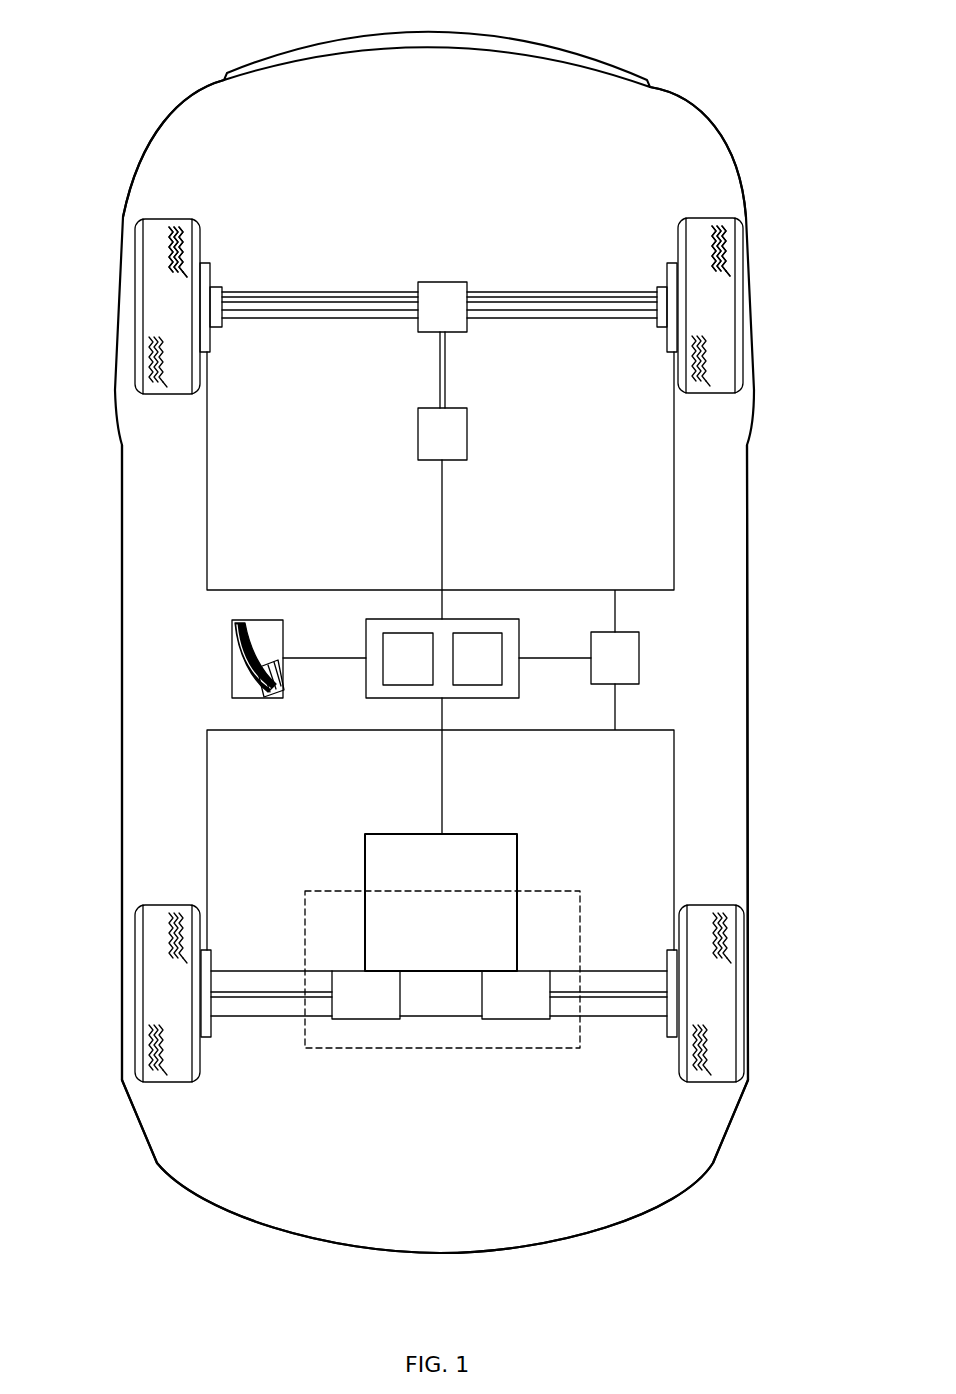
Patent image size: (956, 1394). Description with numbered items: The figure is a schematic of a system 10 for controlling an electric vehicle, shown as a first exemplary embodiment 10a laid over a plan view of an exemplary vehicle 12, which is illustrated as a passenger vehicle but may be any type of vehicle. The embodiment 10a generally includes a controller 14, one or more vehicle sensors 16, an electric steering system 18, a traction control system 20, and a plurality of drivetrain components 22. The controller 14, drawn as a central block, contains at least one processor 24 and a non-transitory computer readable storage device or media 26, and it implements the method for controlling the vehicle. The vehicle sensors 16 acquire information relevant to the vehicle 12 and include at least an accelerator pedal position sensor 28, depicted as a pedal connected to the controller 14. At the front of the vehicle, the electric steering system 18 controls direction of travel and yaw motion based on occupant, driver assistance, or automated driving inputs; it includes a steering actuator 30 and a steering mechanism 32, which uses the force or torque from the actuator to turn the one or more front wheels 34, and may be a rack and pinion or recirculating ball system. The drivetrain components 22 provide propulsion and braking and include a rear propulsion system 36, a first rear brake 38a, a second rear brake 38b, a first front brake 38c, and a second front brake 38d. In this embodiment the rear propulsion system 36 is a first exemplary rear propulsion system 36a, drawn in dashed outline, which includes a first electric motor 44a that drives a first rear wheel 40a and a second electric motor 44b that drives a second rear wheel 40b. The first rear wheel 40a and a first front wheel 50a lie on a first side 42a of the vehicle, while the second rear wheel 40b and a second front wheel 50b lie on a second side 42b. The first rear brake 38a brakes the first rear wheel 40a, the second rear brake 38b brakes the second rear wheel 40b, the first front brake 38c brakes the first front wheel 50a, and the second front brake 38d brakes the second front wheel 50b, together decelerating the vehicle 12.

The system for controlling an electric vehicle 10 is at (476, 1163).
The first exemplary embodiment 10a is at (452, 1108).
The vehicle 12 is at (648, 82).
The controller 14 is at (432, 674).
The vehicle sensors 16 is at (224, 652).
The electric steering system 18 is at (439, 371).
The traction control system 20 is at (615, 658).
The drivetrain components 22 is at (212, 340).
The processor 24 is at (408, 659).
The non-transitory computer readable storage device or media 26 is at (477, 659).
The accelerator pedal position sensor 28 is at (232, 660).
The steering actuator 30 is at (442, 396).
The steering mechanism 32 is at (439, 307).
The front wheels 34 is at (175, 219).
The rear propulsion system 36 is at (439, 941).
The first exemplary rear propulsion system 36a is at (550, 891).
The first rear brake 38a is at (212, 956).
The second rear brake 38b is at (667, 958).
The first front brake 38c is at (206, 263).
The second front brake 38d is at (672, 263).
The first rear wheel 40a is at (155, 1083).
The second rear wheel 40b is at (720, 1083).
The first side 42a is at (122, 594).
The second side 42b is at (747, 572).
The first electric motor 44a is at (346, 995).
The second electric motor 44b is at (574, 995).
The first front wheel 50a is at (152, 394).
The second front wheel 50b is at (700, 394).